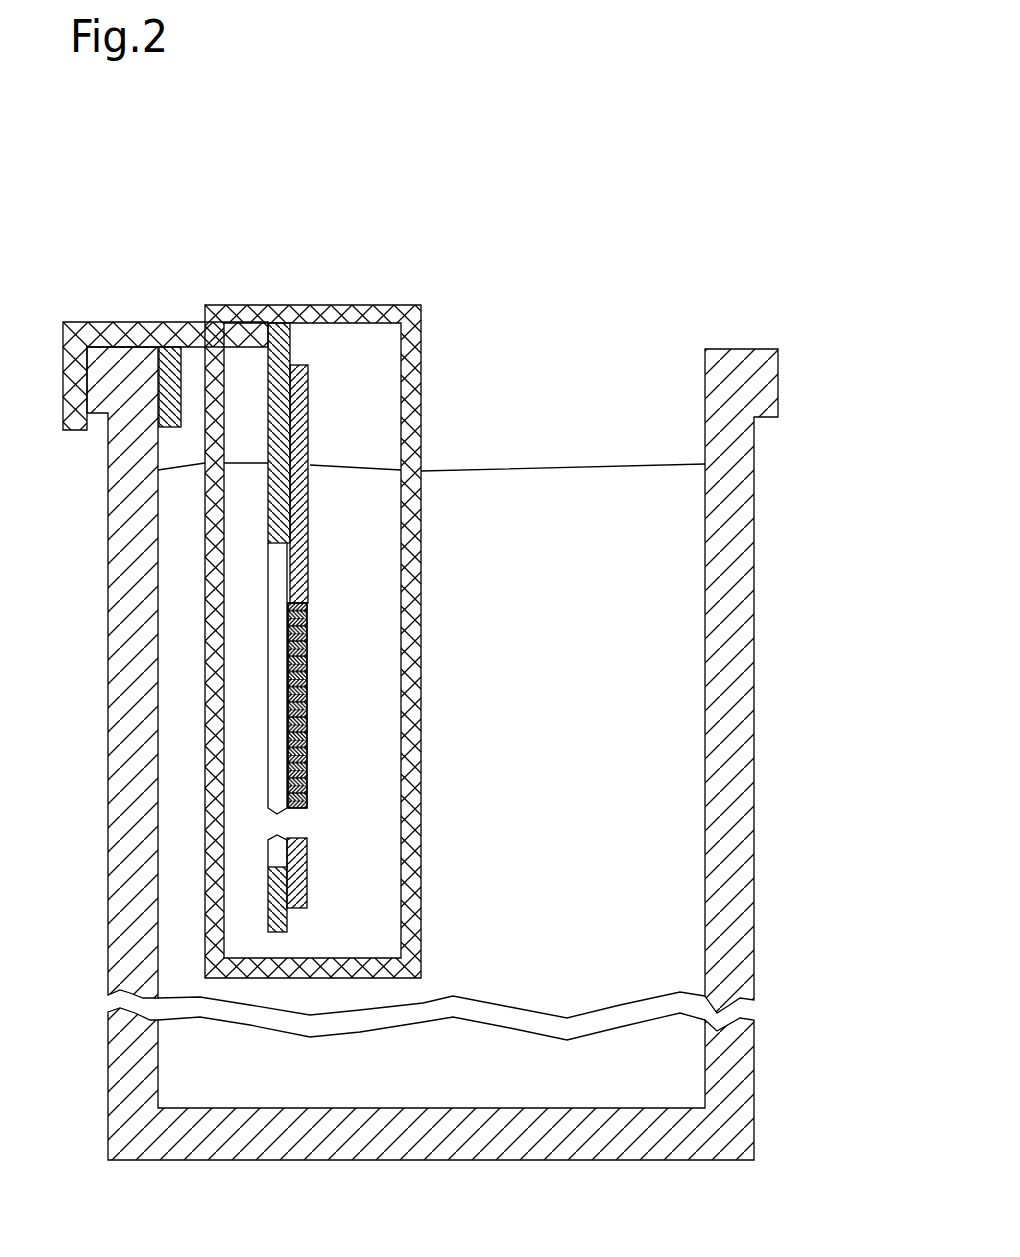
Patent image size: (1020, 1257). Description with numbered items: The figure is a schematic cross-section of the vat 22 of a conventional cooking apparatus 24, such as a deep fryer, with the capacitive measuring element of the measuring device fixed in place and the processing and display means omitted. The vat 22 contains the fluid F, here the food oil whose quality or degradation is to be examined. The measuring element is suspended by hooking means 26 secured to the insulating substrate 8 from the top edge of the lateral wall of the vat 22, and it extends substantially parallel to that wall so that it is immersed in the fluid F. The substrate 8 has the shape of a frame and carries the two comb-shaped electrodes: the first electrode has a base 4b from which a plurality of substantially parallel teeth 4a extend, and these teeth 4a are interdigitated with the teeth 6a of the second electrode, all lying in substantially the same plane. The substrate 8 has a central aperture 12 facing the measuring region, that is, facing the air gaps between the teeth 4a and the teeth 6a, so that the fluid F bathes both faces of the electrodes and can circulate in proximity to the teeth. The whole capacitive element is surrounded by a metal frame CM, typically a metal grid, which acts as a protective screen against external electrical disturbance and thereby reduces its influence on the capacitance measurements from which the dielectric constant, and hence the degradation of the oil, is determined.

The cooking apparatus 24 is at (852, 307).
The vat 22 is at (755, 624).
The hooking means 26 is at (158, 305).
The metal frame CM is at (421, 366).
The insulating substrate 8 is at (280, 347).
The base 4b is at (309, 443).
The teeth 4a is at (308, 619).
The teeth 6a is at (308, 702).
The central aperture 12 is at (262, 702).
The fluid F is at (590, 690).